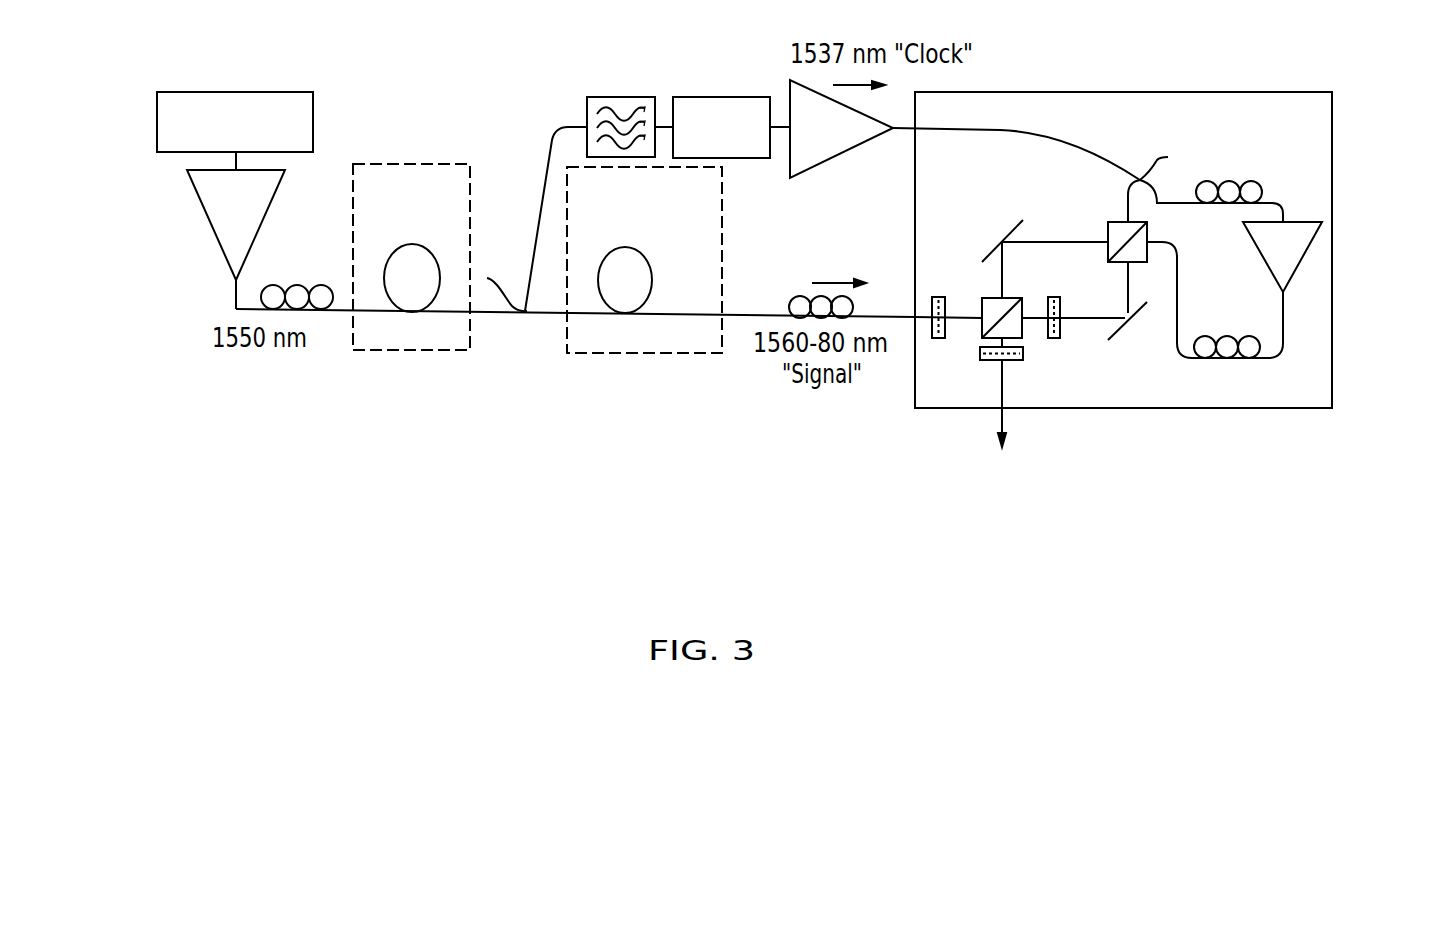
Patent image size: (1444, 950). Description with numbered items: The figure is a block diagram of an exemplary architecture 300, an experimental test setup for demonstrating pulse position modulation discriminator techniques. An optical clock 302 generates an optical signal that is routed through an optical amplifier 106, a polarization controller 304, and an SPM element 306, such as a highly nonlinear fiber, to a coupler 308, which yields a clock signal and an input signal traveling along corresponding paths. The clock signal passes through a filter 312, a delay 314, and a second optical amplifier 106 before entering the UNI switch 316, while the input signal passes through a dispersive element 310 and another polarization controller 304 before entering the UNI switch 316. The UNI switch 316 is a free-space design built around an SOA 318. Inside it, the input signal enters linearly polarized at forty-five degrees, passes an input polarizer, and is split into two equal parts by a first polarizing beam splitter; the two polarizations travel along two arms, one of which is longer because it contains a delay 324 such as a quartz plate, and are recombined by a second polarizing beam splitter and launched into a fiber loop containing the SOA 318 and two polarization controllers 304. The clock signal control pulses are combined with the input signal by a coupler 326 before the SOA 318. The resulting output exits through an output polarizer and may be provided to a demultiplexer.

The architecture 300 is at (576, 478).
The optical clock 302 is at (157, 98).
The optical amplifier 106 is at (205, 222).
The polarization controller 304 is at (308, 314).
The SPM element 306 is at (425, 352).
The coupler 308 is at (517, 318).
The dispersive element 310 is at (617, 355).
The filter 312 is at (606, 97).
The delay 314 is at (694, 97).
The UNI switch 316 is at (1072, 92).
The SOA 318 is at (1303, 262).
The delay 324 is at (1062, 338).
The coupler 326 is at (1138, 178).